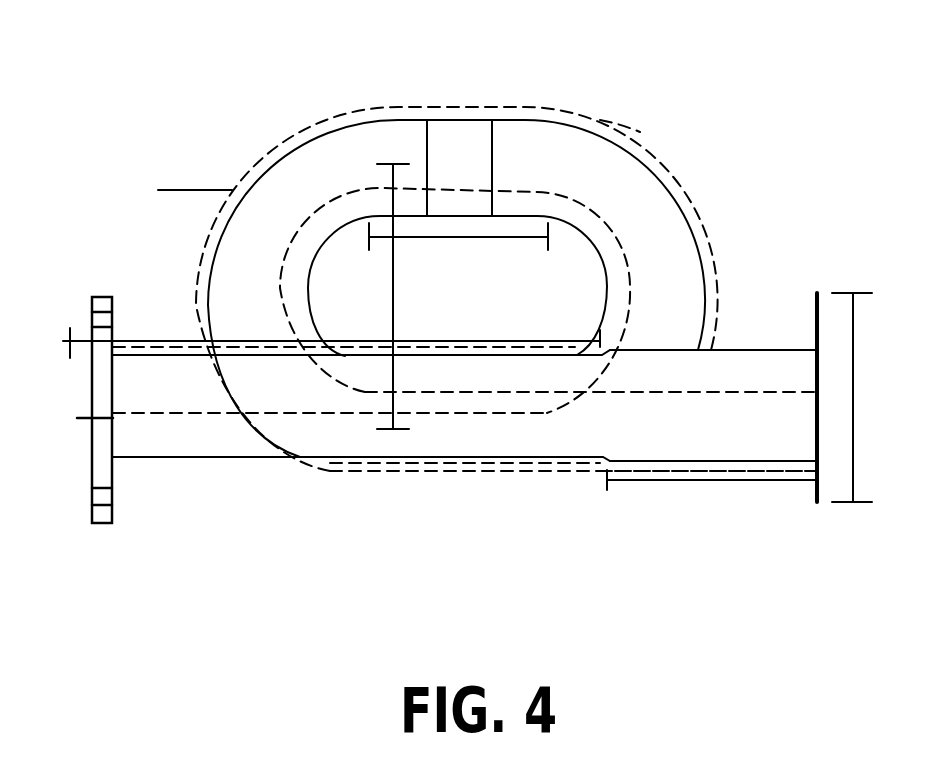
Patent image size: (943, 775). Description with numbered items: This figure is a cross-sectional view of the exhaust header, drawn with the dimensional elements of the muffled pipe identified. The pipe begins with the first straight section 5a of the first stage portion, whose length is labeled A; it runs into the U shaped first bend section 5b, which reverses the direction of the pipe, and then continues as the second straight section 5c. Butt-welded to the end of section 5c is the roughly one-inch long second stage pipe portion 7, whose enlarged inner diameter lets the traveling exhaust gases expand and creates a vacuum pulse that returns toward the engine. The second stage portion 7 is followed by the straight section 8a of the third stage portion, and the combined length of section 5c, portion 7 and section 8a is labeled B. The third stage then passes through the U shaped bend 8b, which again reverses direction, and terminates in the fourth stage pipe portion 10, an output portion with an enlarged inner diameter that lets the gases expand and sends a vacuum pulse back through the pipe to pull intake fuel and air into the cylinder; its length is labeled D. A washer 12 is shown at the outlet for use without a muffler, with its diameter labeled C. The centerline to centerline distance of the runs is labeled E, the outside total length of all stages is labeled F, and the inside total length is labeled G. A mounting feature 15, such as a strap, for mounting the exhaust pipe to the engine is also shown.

The first straight section 5a is at (233, 433).
The first bend section 5b is at (645, 207).
The second straight section 5c is at (510, 158).
The second stage pipe portion 7 is at (462, 138).
The straight section of third stage pipe portion 8a is at (417, 138).
The U shaped bend 8b is at (245, 265).
The fourth stage pipe portion 10 is at (692, 432).
The washer 12 is at (813, 317).
The mounting feature 15 is at (197, 188).
The length of first straight section A is at (322, 344).
The combined length B is at (445, 249).
The washer diameter C is at (852, 385).
The length of fourth stage portion D is at (698, 488).
The centerline to centerline distance E is at (393, 280).
The outside total length F is at (627, 114).
The inside total length G is at (152, 420).